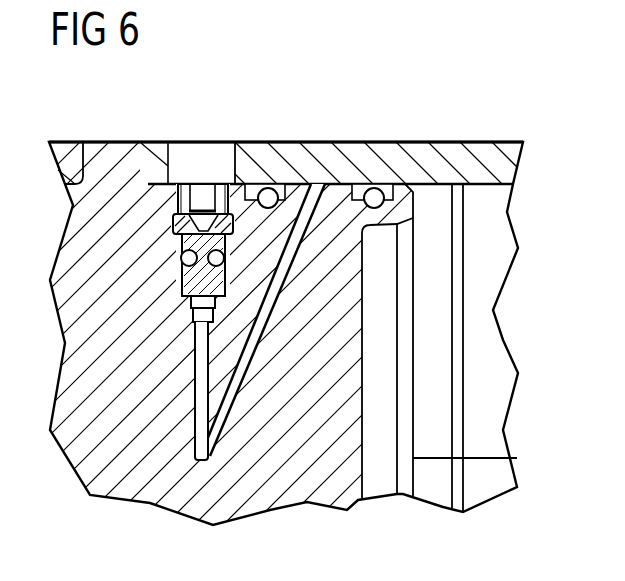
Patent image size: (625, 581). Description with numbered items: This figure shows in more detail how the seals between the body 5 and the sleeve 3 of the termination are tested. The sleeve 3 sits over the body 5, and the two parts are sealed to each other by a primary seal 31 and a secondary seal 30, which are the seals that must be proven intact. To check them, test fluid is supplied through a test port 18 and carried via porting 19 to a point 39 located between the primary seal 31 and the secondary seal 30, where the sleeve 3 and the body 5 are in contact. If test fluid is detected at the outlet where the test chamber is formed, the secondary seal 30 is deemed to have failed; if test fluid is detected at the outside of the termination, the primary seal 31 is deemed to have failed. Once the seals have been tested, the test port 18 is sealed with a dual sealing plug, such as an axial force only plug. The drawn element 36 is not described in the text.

The sleeve 3 is at (471, 160).
The body 5 is at (292, 455).
The test port 18 is at (188, 121).
The porting 19 is at (194, 372).
The secondary seal 30 is at (377, 188).
The primary seal 31 is at (273, 188).
The sensor 36 is at (207, 192).
The point 39 is at (329, 133).